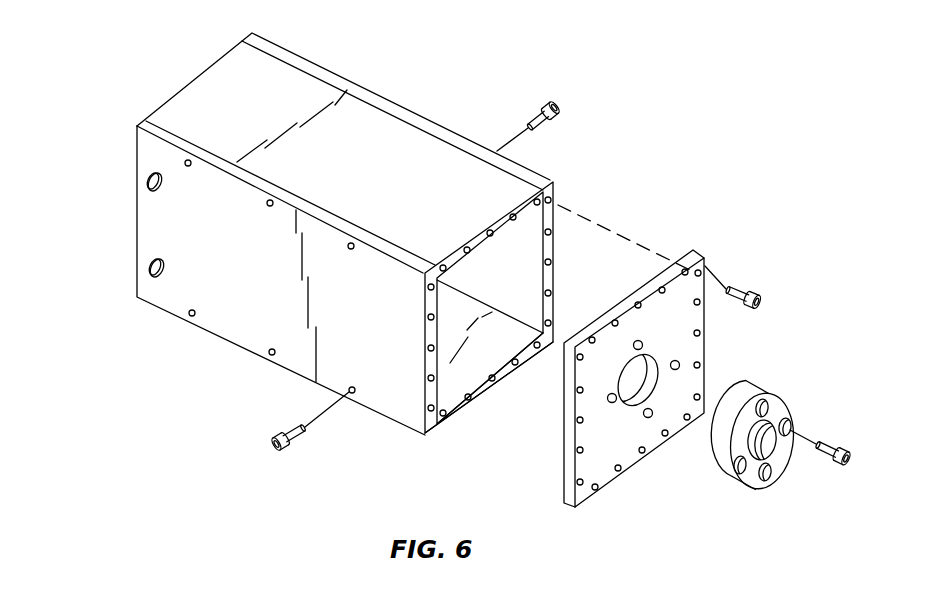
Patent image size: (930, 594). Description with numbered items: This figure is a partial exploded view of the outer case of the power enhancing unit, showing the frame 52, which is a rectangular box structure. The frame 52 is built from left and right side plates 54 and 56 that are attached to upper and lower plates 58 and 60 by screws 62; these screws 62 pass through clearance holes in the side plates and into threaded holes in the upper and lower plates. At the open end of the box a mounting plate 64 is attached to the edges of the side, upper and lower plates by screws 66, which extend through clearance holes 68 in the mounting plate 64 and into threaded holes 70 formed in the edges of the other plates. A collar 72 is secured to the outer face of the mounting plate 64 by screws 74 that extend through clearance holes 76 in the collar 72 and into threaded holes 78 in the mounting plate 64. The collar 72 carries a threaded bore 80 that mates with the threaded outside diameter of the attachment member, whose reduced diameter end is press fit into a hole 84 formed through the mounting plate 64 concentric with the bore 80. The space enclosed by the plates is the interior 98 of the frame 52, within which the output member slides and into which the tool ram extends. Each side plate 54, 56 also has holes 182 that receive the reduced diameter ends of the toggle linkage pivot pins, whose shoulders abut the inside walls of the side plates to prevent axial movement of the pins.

The frame 52 is at (424, 97).
The left side plate 54 is at (401, 416).
The right side plate 56 is at (556, 226).
The upper plate 58 is at (221, 66).
The lower plate 60 is at (478, 392).
The screws 62 is at (565, 100).
The mounting plate 64 is at (697, 252).
The screws 66 is at (771, 298).
The clearance holes 68 is at (703, 267).
The threaded holes 70 is at (556, 185).
The collar 72 is at (770, 387).
The screws 74 is at (834, 462).
The clearance holes 76 is at (768, 482).
The threaded holes 78 is at (671, 361).
The threaded bore 80 is at (778, 422).
The hole 84 is at (650, 388).
The interior 98 is at (512, 274).
The holes 182 is at (148, 186).